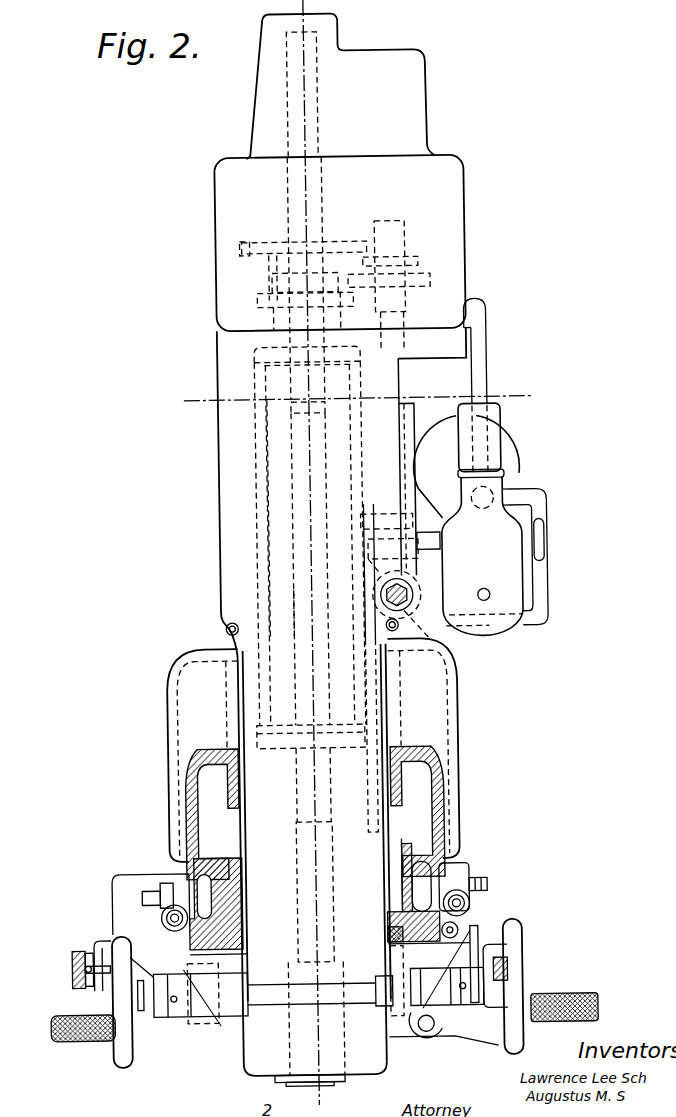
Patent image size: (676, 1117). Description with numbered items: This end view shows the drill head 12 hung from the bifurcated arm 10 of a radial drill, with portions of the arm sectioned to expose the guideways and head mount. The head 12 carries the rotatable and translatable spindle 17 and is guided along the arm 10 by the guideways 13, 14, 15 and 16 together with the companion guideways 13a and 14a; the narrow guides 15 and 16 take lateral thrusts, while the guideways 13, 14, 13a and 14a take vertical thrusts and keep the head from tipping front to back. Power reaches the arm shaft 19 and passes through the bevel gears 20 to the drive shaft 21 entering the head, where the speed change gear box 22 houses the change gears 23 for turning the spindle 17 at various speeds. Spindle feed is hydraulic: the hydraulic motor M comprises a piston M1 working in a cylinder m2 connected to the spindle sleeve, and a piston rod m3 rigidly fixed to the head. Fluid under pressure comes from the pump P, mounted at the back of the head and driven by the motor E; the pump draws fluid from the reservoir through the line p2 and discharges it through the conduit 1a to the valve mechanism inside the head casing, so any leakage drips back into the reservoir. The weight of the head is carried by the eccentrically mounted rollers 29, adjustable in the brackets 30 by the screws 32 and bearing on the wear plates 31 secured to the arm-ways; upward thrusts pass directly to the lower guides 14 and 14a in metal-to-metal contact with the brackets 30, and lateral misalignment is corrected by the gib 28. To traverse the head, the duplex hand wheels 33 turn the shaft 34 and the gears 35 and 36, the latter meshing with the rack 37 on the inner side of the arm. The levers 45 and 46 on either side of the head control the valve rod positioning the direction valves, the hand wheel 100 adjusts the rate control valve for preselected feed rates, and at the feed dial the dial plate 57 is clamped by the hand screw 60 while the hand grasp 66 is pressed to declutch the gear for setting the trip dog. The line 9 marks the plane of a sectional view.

The conduit 1a is at (484, 356).
The section line 9 is at (201, 398).
The arm 10 is at (305, 17).
The drill head 12 is at (212, 460).
The guideway 13 is at (386, 909).
The guideway 13a is at (224, 905).
The lower guide 14 is at (380, 950).
The lower guide 14a is at (234, 956).
The narrow guide 15 is at (445, 930).
The narrow guide 16 is at (380, 920).
The spindle 17 is at (318, 132).
The arm shaft 19 is at (403, 590).
The bevel gears 20 is at (404, 574).
The drive shaft 21 is at (395, 380).
The speed change gear box 22 is at (462, 216).
The change gears 23 is at (358, 240).
The gib 28 is at (465, 938).
The rollers 29 is at (200, 890).
The brackets 30 is at (156, 882).
The wear plates 31 is at (176, 927).
The screws 32 is at (148, 918).
The hand wheels 33 is at (113, 1065).
The shaft 34 is at (259, 995).
The gear 35 is at (376, 1018).
The gear 36 is at (364, 988).
The rack 37 is at (481, 960).
The lever 45 is at (63, 1039).
The lever 46 is at (439, 1025).
The dial plate 57 is at (79, 991).
The hand screw 60 is at (79, 952).
The hand grasp 66 is at (61, 948).
The hand wheel 100 is at (482, 993).
The motor E is at (519, 450).
The hydraulic motor M is at (249, 491).
The piston M1 is at (270, 736).
The cylinder m2 is at (260, 565).
The piston rod m3 is at (283, 590).
The pump P is at (513, 545).
The line p2 is at (541, 596).